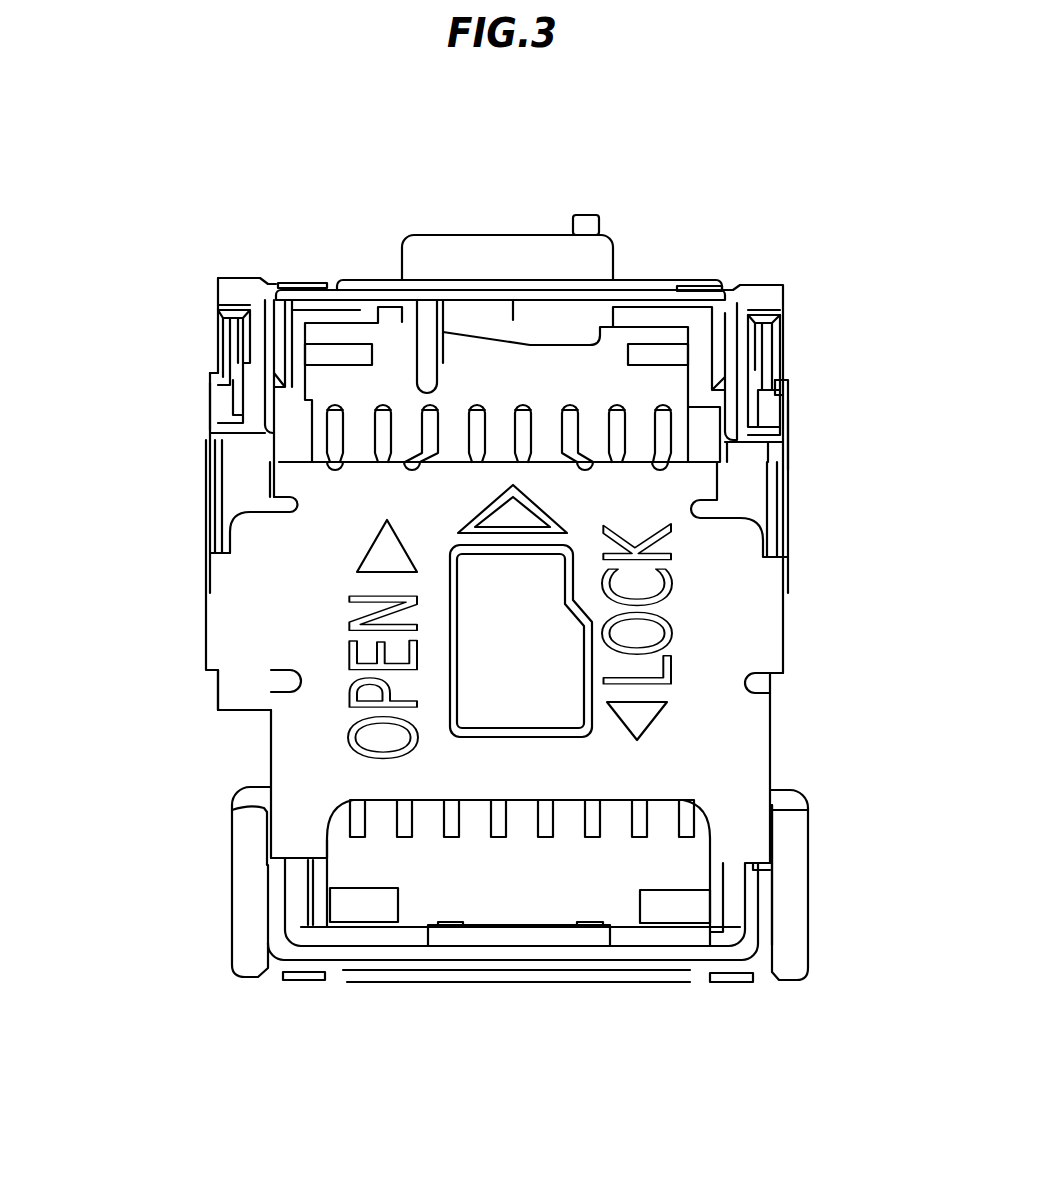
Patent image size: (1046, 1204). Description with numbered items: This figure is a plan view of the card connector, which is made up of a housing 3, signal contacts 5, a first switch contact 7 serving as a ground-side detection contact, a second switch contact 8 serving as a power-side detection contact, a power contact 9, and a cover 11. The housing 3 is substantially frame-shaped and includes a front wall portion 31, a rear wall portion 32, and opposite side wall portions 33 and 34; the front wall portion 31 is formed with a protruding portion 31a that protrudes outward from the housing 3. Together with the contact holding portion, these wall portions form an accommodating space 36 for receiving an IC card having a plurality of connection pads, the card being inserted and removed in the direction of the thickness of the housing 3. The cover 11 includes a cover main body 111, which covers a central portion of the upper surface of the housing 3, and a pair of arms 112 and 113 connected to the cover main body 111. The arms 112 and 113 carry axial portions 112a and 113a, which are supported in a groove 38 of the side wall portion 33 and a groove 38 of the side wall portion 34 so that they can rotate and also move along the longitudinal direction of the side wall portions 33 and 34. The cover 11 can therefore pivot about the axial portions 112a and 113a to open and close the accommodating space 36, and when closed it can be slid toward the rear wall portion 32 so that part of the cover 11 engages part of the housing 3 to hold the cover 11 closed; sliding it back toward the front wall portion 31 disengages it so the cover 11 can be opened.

The housing 3 is at (193, 688).
The signal contacts 5 is at (380, 387).
The first switch contact 7 is at (408, 412).
The second switch contact 8 is at (473, 305).
The power contact 9 is at (522, 390).
The cover 11 is at (193, 633).
The front wall portion 31 is at (448, 287).
The protruding portion 31a is at (428, 247).
The rear wall portion 32 is at (527, 963).
The side wall portion 33 is at (235, 485).
The side wall portion 34 is at (760, 453).
The accommodating space 36 is at (517, 855).
The groove 38 is at (225, 335).
The cover main body 111 is at (690, 633).
The arm 112 is at (207, 398).
The axial portion 112a is at (218, 380).
The arm 113 is at (790, 400).
The axial portion 113a is at (775, 385).